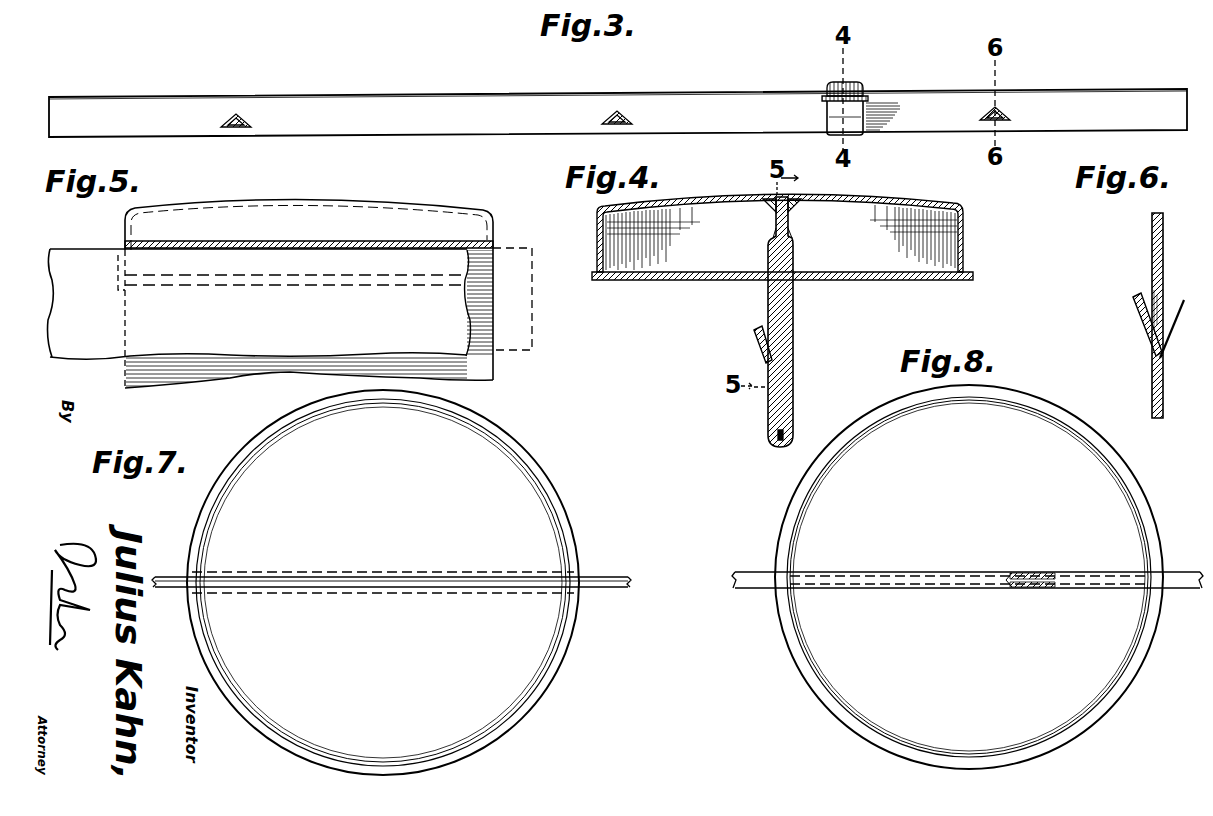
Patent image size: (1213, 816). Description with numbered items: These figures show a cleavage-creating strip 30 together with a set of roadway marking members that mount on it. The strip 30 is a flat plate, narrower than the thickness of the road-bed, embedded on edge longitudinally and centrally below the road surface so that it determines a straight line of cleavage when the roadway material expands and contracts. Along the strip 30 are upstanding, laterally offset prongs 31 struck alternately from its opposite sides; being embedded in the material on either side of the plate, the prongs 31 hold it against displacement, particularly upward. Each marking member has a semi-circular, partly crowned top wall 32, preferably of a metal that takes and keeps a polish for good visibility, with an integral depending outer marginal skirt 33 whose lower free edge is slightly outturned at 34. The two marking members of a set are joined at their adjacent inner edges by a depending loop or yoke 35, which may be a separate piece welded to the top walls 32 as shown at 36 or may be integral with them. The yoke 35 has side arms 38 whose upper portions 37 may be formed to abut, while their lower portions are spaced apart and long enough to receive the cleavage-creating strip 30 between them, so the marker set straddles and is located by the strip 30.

In FIG. 3, the cleavage-creating strip 30 is at (455, 97).
In FIG. 5, the cleavage-creating strip 30 is at (85, 350).
In FIG. 4, the cleavage-creating strip 30 is at (794, 398).
In FIG. 6, the cleavage-creating strip 30 is at (1152, 244).
In FIG. 7, the cleavage-creating strip 30 is at (600, 590).
In FIG. 8, the cleavage-creating strip 30 is at (1030, 576).
In FIG. 3, the prongs 31 is at (242, 120).
In FIG. 4, the prongs 31 is at (756, 342).
In FIG. 6, the prongs 31 is at (1137, 310).
In FIG. 3, the top wall 32 is at (858, 86).
In FIG. 5, the top wall 32 is at (318, 205).
In FIG. 4, the top wall 32 is at (760, 198).
In FIG. 7, the top wall 32 is at (383, 582).
In FIG. 8, the top wall 32 is at (1022, 476).
In FIG. 3, the outer marginal skirts 33 is at (822, 96).
In FIG. 5, the outer marginal skirts 33 is at (309, 244).
In FIG. 4, the outer marginal skirts 33 is at (597, 230).
In FIG. 3, the outturned lower free edges 34 is at (827, 112).
In FIG. 5, the outturned lower free edges 34 is at (494, 284).
In FIG. 4, the outturned lower free edges 34 is at (592, 277).
In FIG. 7, the outturned lower free edges 34 is at (562, 514).
In FIG. 8, the outturned lower free edges 34 is at (784, 552).
In FIG. 4, the yokes 35 is at (777, 446).
In FIG. 8, the yokes 35 is at (900, 590).
In FIG. 4, the weld 36 is at (768, 204).
In FIG. 4, the upper portions of the side arms 37 is at (775, 236).
In FIG. 7, the upper portions of the side arms 37 is at (373, 575).
In FIG. 5, the side arms 38 is at (485, 370).
In FIG. 4, the side arms 38 is at (768, 296).